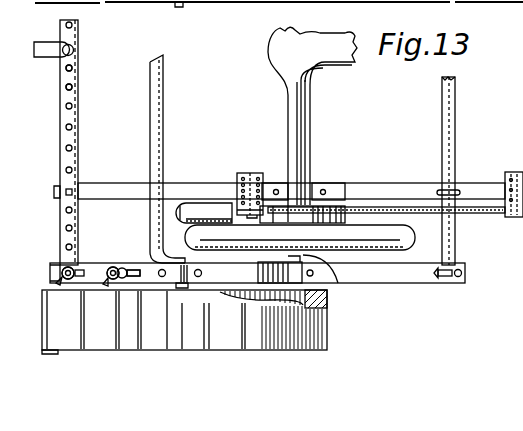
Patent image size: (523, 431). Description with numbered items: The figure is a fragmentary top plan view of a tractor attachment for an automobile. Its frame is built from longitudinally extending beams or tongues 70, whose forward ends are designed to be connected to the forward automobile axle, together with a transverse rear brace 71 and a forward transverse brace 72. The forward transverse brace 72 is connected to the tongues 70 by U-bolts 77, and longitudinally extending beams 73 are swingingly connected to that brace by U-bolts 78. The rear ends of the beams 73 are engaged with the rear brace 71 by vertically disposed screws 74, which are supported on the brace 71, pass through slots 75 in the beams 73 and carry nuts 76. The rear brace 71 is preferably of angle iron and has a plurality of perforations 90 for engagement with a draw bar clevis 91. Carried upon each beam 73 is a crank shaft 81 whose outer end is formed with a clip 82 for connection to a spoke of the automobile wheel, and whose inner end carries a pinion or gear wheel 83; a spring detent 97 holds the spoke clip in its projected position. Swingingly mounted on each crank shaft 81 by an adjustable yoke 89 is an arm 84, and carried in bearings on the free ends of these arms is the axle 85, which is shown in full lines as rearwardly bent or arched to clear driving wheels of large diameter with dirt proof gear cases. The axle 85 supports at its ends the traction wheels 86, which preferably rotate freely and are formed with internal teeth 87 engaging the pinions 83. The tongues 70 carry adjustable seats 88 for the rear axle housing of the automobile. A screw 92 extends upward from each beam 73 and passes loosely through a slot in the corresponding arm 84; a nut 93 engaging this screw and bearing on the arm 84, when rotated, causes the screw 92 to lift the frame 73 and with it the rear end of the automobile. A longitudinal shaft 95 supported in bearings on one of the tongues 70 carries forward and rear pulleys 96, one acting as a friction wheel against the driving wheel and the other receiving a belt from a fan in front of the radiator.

The longitudinally extending beams or tongues 70 is at (386, 190).
The transverse rear brace 71 is at (60, 115).
The forward transverse brace 72 is at (455, 140).
The longitudinally extending beams 73 is at (409, 268).
The vertically disposed screws 74 is at (63, 267).
The slots 75 is at (80, 268).
The nuts 76 is at (52, 276).
The U-bolts 77 is at (456, 190).
The U-bolts 78 is at (462, 283).
The crank shaft 81 is at (360, 263).
The clip 82 is at (408, 252).
The pinion or gear wheel 83 is at (325, 302).
The arm 84 is at (140, 265).
The axle 85 is at (150, 140).
The traction wheels 86 is at (130, 338).
The internal teeth 87 is at (258, 265).
The adjustable seats 88 is at (315, 183).
The adjustable yokes 89 is at (278, 262).
The perforations 90 is at (66, 87).
The draw bar clevis 91 is at (34, 49).
The screw 92 is at (117, 265).
The nut 93 is at (110, 284).
The longitudinal shaft 95 is at (487, 213).
The pulleys 96 is at (205, 2).
The spring detent 97 is at (370, 266).